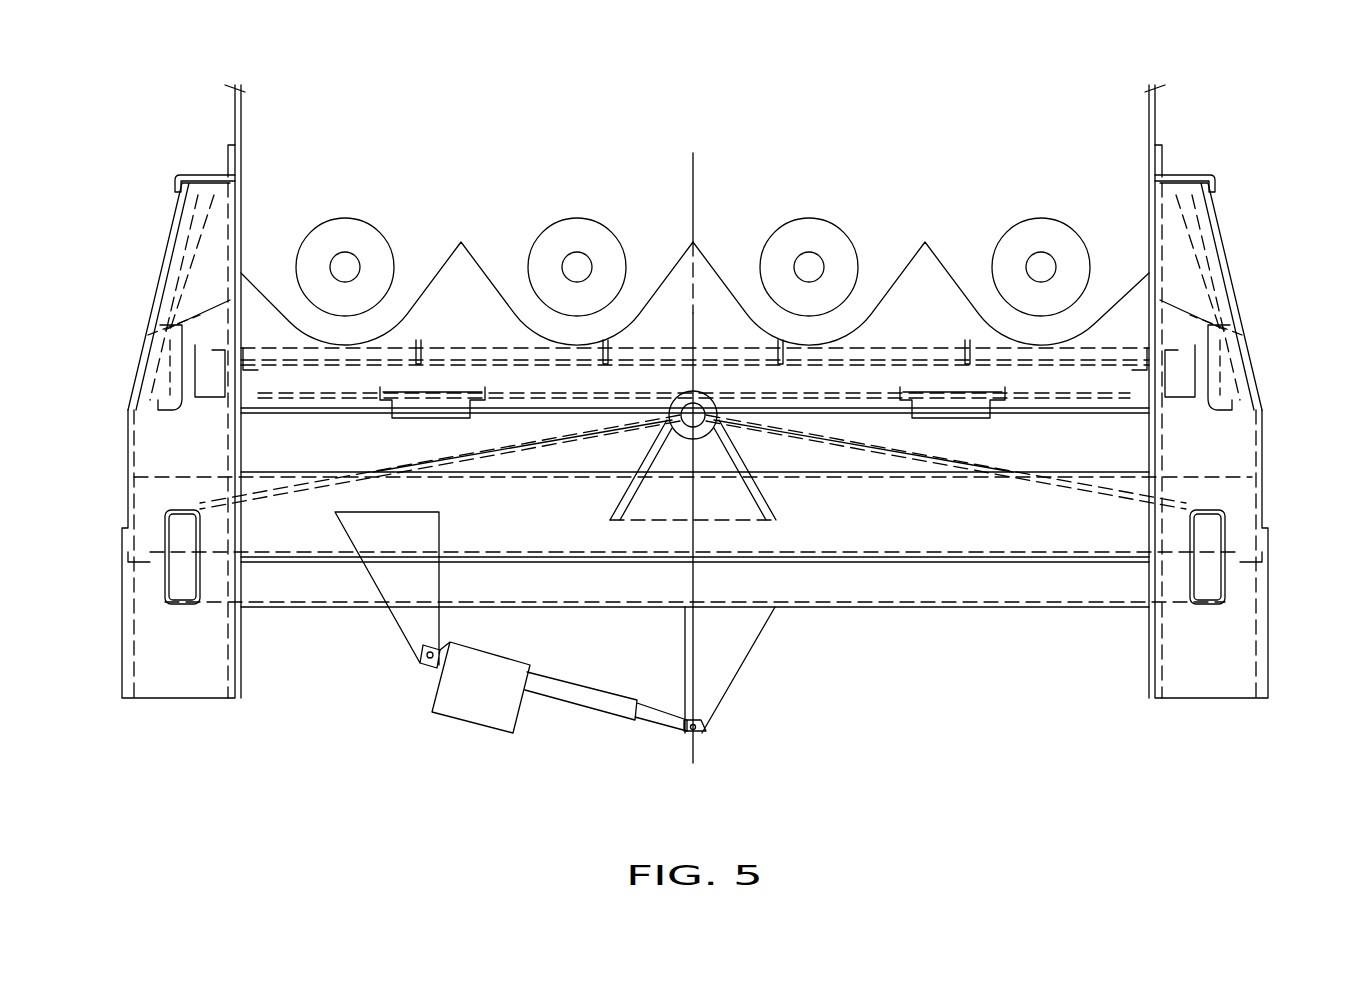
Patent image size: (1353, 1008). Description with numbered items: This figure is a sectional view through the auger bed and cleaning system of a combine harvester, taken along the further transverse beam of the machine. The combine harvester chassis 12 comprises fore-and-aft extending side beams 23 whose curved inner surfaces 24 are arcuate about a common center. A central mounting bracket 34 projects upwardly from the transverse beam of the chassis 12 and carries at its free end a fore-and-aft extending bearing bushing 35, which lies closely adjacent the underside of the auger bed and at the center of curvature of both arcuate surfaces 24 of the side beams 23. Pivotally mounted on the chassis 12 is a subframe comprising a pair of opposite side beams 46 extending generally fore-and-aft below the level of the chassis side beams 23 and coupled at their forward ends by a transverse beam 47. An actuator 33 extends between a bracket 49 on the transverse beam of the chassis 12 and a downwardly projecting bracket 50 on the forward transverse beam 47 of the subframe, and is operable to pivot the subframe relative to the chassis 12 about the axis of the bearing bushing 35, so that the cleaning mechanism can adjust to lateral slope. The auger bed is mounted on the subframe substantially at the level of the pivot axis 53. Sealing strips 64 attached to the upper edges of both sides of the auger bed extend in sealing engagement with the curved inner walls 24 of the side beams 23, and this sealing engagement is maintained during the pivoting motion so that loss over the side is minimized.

The combine harvester chassis 12 is at (238, 672).
The side beams 23 is at (172, 253).
The curved inner surfaces 24 is at (200, 243).
The sealing strips 64 is at (190, 298).
The side beams 46 is at (203, 585).
The transverse beam 47 is at (462, 447).
The central mounting bracket 34 is at (737, 447).
The bearing bushing 35 is at (700, 440).
The pivot axis 53 is at (672, 432).
The bracket 50 is at (720, 668).
The bracket 49 is at (417, 628).
The actuator 33 is at (587, 698).